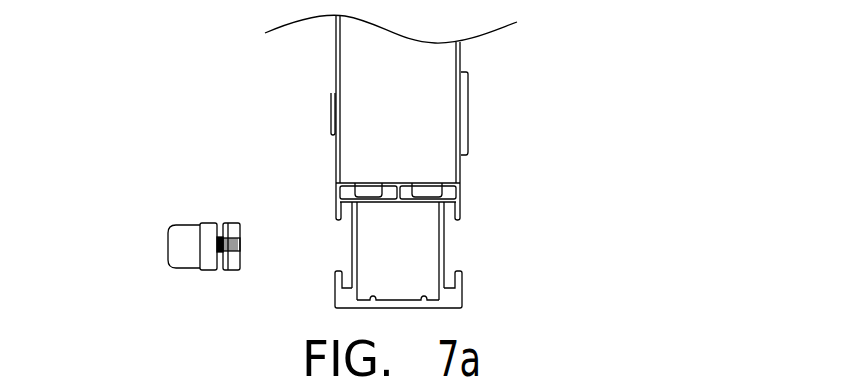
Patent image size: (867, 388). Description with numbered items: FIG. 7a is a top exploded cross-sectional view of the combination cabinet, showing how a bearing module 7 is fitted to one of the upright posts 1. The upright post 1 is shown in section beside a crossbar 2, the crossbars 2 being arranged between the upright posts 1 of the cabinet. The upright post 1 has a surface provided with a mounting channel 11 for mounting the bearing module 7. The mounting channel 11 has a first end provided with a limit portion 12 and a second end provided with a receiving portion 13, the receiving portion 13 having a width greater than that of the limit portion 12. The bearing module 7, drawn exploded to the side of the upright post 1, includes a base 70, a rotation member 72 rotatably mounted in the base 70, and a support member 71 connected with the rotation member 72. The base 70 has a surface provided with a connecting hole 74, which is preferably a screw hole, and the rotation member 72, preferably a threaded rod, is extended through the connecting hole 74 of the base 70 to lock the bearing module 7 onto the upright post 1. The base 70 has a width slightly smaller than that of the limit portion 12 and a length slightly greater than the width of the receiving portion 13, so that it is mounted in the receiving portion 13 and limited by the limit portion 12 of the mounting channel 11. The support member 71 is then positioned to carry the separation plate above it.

The upright post 1 is at (435, 205).
The crossbar 2 is at (427, 102).
The mounting channel 11 is at (350, 248).
The limit portion 12 is at (338, 244).
The receiving portion 13 is at (347, 212).
The bearing module 7 is at (212, 247).
The base 70 is at (235, 266).
The support member 71 is at (183, 248).
The rotation member 72 is at (222, 222).
The connecting hole 74 is at (238, 248).